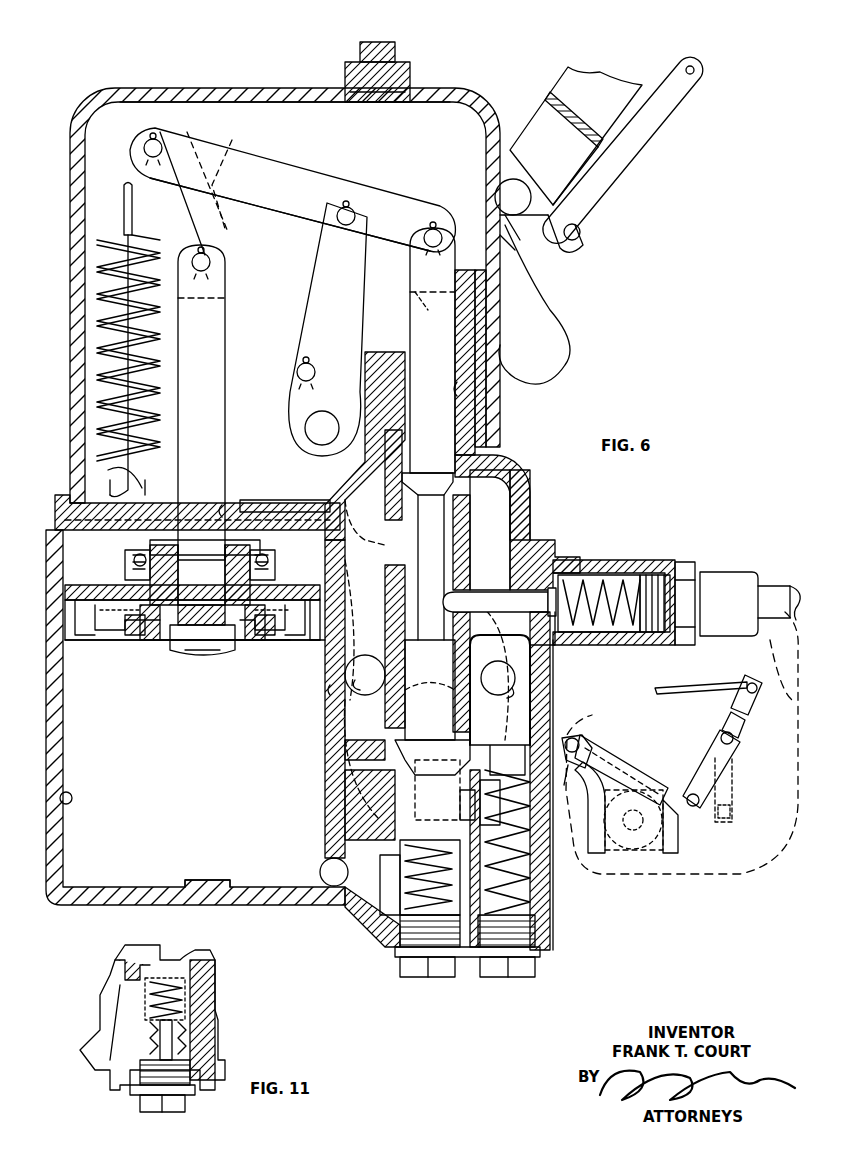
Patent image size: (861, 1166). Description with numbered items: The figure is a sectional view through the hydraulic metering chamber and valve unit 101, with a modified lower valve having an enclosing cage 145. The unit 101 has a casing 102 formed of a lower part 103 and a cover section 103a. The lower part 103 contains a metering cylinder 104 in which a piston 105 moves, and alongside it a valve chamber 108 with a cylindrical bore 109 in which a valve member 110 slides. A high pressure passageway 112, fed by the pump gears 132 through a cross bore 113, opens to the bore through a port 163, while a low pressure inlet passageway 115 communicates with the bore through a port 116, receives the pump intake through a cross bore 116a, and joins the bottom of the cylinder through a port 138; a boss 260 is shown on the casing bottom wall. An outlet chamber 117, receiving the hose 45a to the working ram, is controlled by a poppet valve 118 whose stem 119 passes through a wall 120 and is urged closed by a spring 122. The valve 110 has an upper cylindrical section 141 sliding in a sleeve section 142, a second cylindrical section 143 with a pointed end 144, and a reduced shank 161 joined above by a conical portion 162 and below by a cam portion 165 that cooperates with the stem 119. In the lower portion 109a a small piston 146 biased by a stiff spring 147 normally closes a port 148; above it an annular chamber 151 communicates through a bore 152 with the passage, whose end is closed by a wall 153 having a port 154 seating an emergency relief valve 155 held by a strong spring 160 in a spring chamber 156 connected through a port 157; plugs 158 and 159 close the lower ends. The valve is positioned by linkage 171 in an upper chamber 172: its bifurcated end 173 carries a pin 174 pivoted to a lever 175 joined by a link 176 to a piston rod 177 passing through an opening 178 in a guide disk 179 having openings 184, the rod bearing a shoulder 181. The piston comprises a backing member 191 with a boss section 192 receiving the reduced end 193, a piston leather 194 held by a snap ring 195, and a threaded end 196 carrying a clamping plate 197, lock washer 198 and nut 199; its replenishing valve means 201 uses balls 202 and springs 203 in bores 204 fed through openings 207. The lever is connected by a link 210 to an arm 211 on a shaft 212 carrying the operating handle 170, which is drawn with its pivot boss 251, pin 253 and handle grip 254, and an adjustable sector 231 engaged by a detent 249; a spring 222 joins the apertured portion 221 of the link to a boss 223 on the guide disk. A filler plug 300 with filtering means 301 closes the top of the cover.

In FIG. 6, the hydraulic metering chamber and valve unit 101 is at (582, 377).
In FIG. 6, the casing 102 is at (62, 515).
In FIG. 6, the lower part 103 is at (55, 735).
In FIG. 6, the upper part or cover section 103a is at (131, 90).
In FIG. 6, the metering or control chamber or cylinder 104 is at (68, 800).
In FIG. 6, the piston 105 is at (148, 677).
In FIG. 6, the valve chamber 108 is at (560, 680).
In FIG. 6, the cylindrical bore 109 is at (400, 618).
In FIG. 6, the lower portion of the valve cylinder 109a is at (395, 812).
In FIG. 11, the lower portion of the valve cylinder 109a is at (125, 955).
In FIG. 6, the valve member 110 is at (399, 322).
In FIG. 6, the high pressure or pump outlet passageway 112 is at (535, 708).
In FIG. 6, the cross bore 113 is at (518, 686).
In FIG. 6, the low pressure or pump inlet passageway 115 is at (330, 650).
In FIG. 6, the port 116 is at (395, 560).
In FIG. 6, the intake or cross bore 116a is at (338, 688).
In FIG. 6, the outlet chamber 117 is at (612, 570).
In FIG. 6, the poppet valve 118 is at (560, 565).
In FIG. 6, the valve stem 119 is at (515, 605).
In FIG. 6, the wall 120 is at (505, 600).
In FIG. 6, the spring 122 is at (615, 615).
In FIG. 6, the gears 132 is at (451, 665).
In FIG. 6, the port 138 is at (320, 870).
In FIG. 6, the upper cylindrical section 141 is at (470, 355).
In FIG. 6, the sleeve section 142 is at (465, 381).
In FIG. 6, the second cylindrical section 143 is at (340, 718).
In FIG. 6, the lower pointed end 144 is at (400, 762).
In FIG. 11, the enclosing cage 145 is at (200, 1043).
In FIG. 6, the small piston 146 is at (392, 860).
In FIG. 6, the spring 147 is at (385, 920).
In FIG. 6, the port 148 is at (350, 900).
In FIG. 11, the port 148 is at (128, 1008).
In FIG. 6, the annular chamber 151 is at (400, 743).
In FIG. 6, the bore 152 is at (455, 740).
In FIG. 6, the wall 153 is at (455, 738).
In FIG. 6, the port 154 is at (470, 765).
In FIG. 6, the high pressure emergency relief valve 155 is at (485, 810).
In FIG. 6, the spring chamber 156 is at (538, 915).
In FIG. 6, the port 157 is at (455, 790).
In FIG. 11, the port 157 is at (215, 955).
In FIG. 6, the screw threaded plug 158 is at (418, 965).
In FIG. 11, the screw threaded plug 158 is at (145, 1100).
In FIG. 6, the screw threaded plug 159 is at (510, 965).
In FIG. 6, the spring 160 is at (540, 892).
In FIG. 6, the reduced shank 161 is at (450, 525).
In FIG. 6, the tapered or conical portion 162 is at (418, 478).
In FIG. 6, the port 163 is at (482, 462).
In FIG. 6, the cam portion 165 is at (420, 598).
In FIG. 6, the operating handle 170 is at (589, 50).
In FIG. 6, the linkage 171 is at (309, 151).
In FIG. 6, the upper chamber 172 is at (262, 102).
In FIG. 6, the bifurcated upper end 173 is at (420, 285).
In FIG. 6, the pin 174 is at (433, 225).
In FIG. 6, the lever 175 is at (276, 200).
In FIG. 6, the link 176 is at (190, 212).
In FIG. 6, the piston rod 177 is at (215, 350).
In FIG. 6, the opening 178 is at (225, 500).
In FIG. 6, the guide disk 179 is at (162, 489).
In FIG. 6, the shoulder 181 is at (188, 552).
In FIG. 6, the openings 184 is at (286, 510).
In FIG. 6, the backing member 191 is at (70, 575).
In FIG. 6, the central boss section 192 is at (170, 540).
In FIG. 6, the reduced end 193 is at (205, 630).
In FIG. 6, the piston leather 194 is at (70, 610).
In FIG. 6, the snap ring 195 is at (95, 617).
In FIG. 6, the threaded end 196 is at (188, 635).
In FIG. 6, the clamping plate member 197 is at (270, 620).
In FIG. 6, the lock washer 198 is at (165, 632).
In FIG. 6, the clamping nut 199 is at (195, 655).
In FIG. 6, the valve means 201 is at (130, 553).
In FIG. 6, the ball 202 is at (218, 575).
In FIG. 6, the biasing spring 203 is at (268, 568).
In FIG. 6, the bore 204 is at (128, 565).
In FIG. 6, the openings 207 is at (120, 640).
In FIG. 6, the link 210 is at (320, 275).
In FIG. 6, the arm 211 is at (300, 405).
In FIG. 6, the shaft 212 is at (305, 435).
In FIG. 6, the apertured portion 221 is at (135, 172).
In FIG. 6, the spring 222 is at (97, 286).
In FIG. 6, the apertured boss 223 is at (82, 470).
In FIG. 6, the adjustable sector 231 is at (551, 271).
In FIG. 6, the detent 249 is at (552, 210).
In FIG. 6, the pivot boss 251 is at (525, 190).
In FIG. 6, the pin 253 is at (580, 238).
In FIG. 6, the handle 254 is at (650, 128).
In FIG. 6, the boss 260 is at (188, 885).
In FIG. 6, the filler plug 300 is at (385, 70).
In FIG. 6, the filtering means 301 is at (380, 95).
In FIG. 6, the hose 45a is at (782, 625).